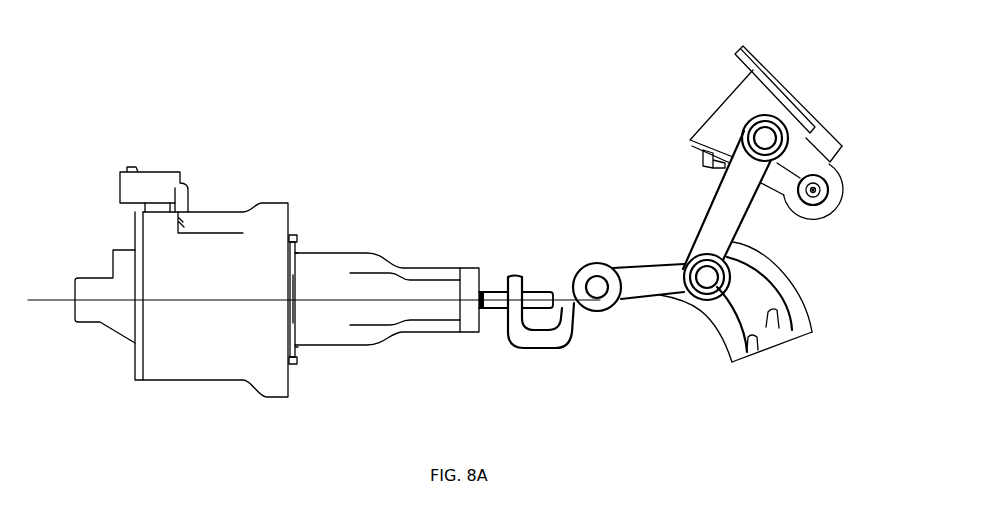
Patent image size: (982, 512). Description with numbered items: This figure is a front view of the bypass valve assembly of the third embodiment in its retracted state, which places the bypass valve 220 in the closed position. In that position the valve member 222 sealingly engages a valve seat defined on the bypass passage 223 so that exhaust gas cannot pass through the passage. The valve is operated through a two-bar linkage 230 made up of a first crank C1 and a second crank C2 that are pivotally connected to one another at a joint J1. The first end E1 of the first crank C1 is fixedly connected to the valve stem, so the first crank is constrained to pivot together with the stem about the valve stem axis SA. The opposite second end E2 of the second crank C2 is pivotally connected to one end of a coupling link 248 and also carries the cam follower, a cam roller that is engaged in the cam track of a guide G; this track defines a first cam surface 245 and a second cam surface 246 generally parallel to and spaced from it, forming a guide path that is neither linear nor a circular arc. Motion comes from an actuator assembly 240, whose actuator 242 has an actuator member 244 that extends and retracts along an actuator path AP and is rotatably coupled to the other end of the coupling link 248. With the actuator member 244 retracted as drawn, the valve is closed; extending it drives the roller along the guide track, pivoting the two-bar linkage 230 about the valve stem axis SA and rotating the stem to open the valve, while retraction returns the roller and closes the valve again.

The actuator assembly 240 is at (322, 221).
The actuator 242 is at (374, 266).
The actuator member 244 is at (537, 292).
The coupling link 248 is at (648, 278).
The actuator path AP is at (584, 300).
The second end of the second crank E2 is at (686, 268).
The guide G is at (719, 318).
The second cam surface 246 is at (759, 342).
The first cam surface 245 is at (773, 323).
The second crank C2 is at (737, 212).
The joint J1 is at (750, 112).
The two-bar linkage 230 is at (832, 159).
The bypass valve 220 is at (677, 132).
The bypass passage 223 is at (750, 113).
The valve member 222 is at (703, 168).
The first crank C1 is at (806, 144).
The first end of the first crank E1 is at (828, 192).
The valve stem axis SA is at (813, 194).